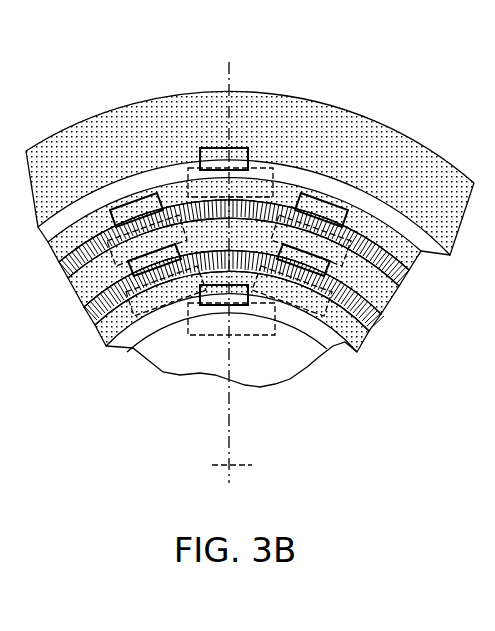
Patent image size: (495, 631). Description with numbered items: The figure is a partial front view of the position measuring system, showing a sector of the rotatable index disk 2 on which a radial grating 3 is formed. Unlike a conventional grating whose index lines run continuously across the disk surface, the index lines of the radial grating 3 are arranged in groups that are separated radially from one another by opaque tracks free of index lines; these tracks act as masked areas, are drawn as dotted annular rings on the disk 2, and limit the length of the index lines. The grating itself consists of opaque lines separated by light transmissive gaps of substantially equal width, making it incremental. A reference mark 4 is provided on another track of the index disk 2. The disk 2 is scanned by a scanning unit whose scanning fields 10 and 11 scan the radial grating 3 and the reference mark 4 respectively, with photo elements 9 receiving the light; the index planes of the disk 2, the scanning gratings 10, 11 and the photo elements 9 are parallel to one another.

The index disk 2 is at (310, 357).
The radial grating 3 is at (414, 292).
The reference mark 4 is at (127, 350).
The photo elements 9 is at (186, 184).
The scanning field 10 is at (236, 147).
The scanning field 11 is at (238, 290).